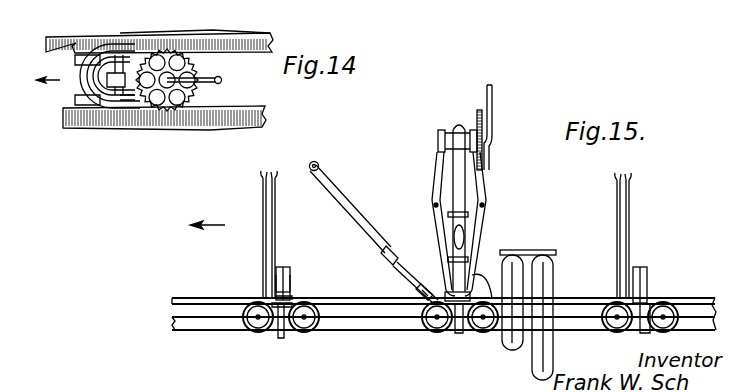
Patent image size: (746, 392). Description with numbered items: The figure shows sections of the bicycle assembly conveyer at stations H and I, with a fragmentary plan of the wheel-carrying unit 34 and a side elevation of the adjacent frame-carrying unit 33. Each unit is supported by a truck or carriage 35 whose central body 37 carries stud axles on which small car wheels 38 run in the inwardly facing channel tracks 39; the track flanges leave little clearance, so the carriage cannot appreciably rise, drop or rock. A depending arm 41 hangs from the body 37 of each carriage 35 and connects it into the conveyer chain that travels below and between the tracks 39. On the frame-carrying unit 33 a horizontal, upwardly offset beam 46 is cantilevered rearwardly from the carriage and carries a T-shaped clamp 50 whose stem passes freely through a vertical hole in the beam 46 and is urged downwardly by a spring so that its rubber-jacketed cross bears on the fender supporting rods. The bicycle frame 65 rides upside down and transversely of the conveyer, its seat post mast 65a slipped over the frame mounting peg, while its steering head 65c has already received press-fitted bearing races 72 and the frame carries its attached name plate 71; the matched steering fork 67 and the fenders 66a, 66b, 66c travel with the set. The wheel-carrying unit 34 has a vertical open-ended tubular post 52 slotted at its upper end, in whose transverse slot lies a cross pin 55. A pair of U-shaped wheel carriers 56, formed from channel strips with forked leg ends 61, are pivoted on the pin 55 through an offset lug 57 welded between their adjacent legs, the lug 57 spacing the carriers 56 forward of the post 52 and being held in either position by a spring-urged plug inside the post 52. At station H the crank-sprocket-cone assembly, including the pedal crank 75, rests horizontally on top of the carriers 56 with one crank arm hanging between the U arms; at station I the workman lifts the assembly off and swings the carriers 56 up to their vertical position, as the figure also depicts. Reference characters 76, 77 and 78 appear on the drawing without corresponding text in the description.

In FIG. 15, the frame-carrying unit 33 is at (378, 292).
In FIG. 14, the wheel-carrying unit 34 is at (113, 63).
In FIG. 15, the wheel-carrying unit 34 is at (299, 292).
In FIG. 15, the truck or carriage 35 is at (278, 333).
In FIG. 15, the central body 37 is at (455, 333).
In FIG. 15, the car wheel 38 is at (306, 333).
In FIG. 14, the channel track 39 is at (250, 40).
In FIG. 15, the channel track 39 is at (706, 293).
In FIG. 15, the depending arm 41 is at (663, 300).
In FIG. 15, the beam 46 is at (500, 278).
In FIG. 15, the T-shaped clamp 50 is at (537, 268).
In FIG. 15, the tubular post 52 is at (289, 272).
In FIG. 15, the cross pin 55 is at (280, 268).
In FIG. 14, the U-shaped wheel carrier 56 is at (133, 33).
In FIG. 15, the U-shaped wheel carrier 56 is at (277, 245).
In FIG. 14, the offset lug 57 is at (105, 80).
In FIG. 15, the forked end 61 is at (269, 174).
In FIG. 15, the bicycle frame 65 is at (460, 182).
In FIG. 15, the seat post mast 65a is at (455, 252).
In FIG. 15, the steering head 65c is at (455, 130).
In FIG. 15, the guide member 66a is at (369, 6).
In FIG. 15, the guide member 66b is at (507, 345).
In FIG. 15, the guide member 66c is at (535, 375).
In FIG. 15, the steering fork 67 is at (340, 200).
In FIG. 15, the name plate 71 is at (456, 232).
In FIG. 15, the bearing races 72 is at (436, 206).
In FIG. 14, the pedal crank 75 is at (197, 65).
In FIG. 15, the pedal crank 75 is at (433, 168).
In FIG. 14, the rack 76 is at (200, 96).
In FIG. 15, the rack 76 is at (484, 112).
In FIG. 15, the spool 77 is at (470, 128).
In FIG. 15, the collar 78 is at (445, 132).